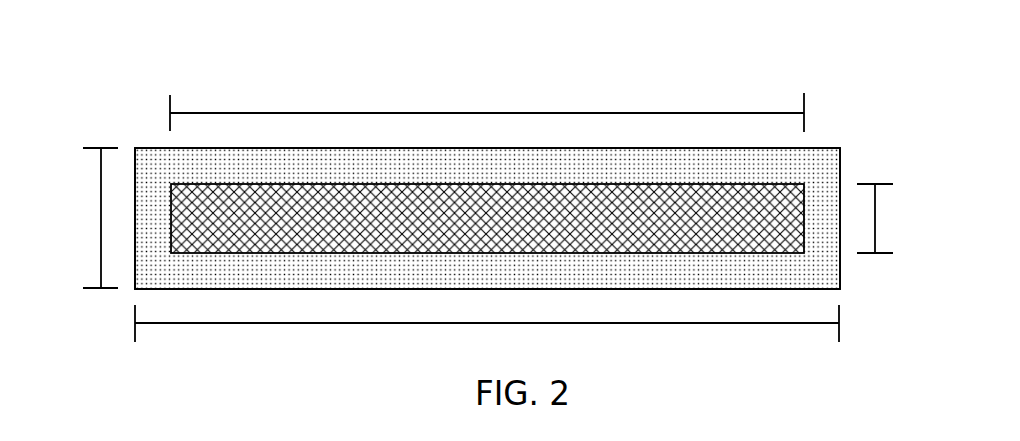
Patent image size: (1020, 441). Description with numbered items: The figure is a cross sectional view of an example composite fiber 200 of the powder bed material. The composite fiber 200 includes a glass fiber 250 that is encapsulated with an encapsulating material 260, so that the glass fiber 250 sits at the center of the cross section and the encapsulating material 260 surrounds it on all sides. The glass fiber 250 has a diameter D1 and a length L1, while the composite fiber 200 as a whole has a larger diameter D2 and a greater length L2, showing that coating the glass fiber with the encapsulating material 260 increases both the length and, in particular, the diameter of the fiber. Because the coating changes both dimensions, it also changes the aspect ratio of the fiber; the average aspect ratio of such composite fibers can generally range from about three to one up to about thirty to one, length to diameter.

The composite fiber 200 is at (230, 46).
The glass fiber 250 is at (195, 203).
The encapsulating material 260 is at (803, 163).
The length of the glass fiber L1 is at (693, 112).
The length of the composite fiber L2 is at (302, 324).
The diameter of the glass fiber D1 is at (876, 220).
The diameter of the composite fiber D2 is at (100, 220).